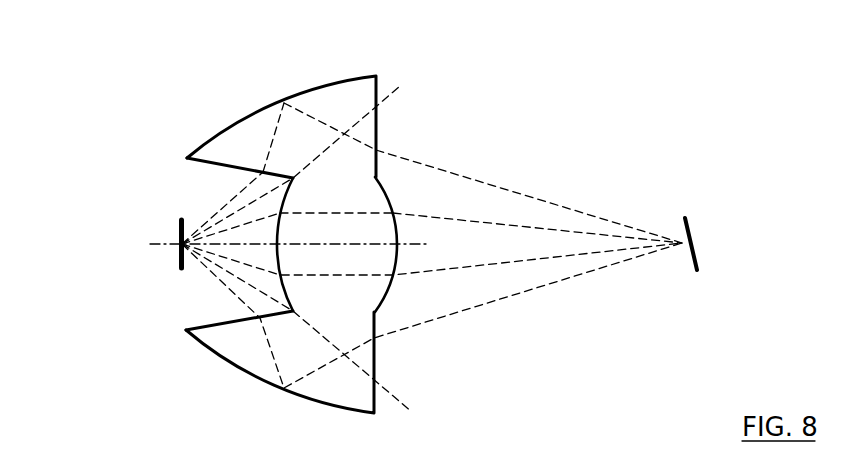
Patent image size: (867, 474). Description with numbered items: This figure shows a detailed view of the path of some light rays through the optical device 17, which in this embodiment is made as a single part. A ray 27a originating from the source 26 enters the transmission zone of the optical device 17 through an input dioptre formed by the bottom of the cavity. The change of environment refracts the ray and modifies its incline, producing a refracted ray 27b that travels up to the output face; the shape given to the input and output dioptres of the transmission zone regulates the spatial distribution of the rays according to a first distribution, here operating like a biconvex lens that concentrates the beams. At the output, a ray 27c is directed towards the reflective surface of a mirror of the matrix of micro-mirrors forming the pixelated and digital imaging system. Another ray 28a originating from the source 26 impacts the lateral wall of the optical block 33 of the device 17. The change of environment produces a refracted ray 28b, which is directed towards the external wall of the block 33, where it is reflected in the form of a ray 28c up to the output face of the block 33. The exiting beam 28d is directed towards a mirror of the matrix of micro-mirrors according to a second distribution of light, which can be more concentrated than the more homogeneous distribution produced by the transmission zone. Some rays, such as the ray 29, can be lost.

The optical device 17 is at (227, 250).
The source 26 is at (182, 243).
The ray 27a is at (230, 232).
The refracted ray 27b is at (352, 212).
The ray 27c is at (530, 228).
The ray 28a is at (226, 207).
The refracted ray 28b is at (279, 135).
The ray 28c is at (325, 123).
The exiting beam 28d is at (458, 178).
The ray 29 is at (355, 125).
The optical block 33 is at (223, 335).